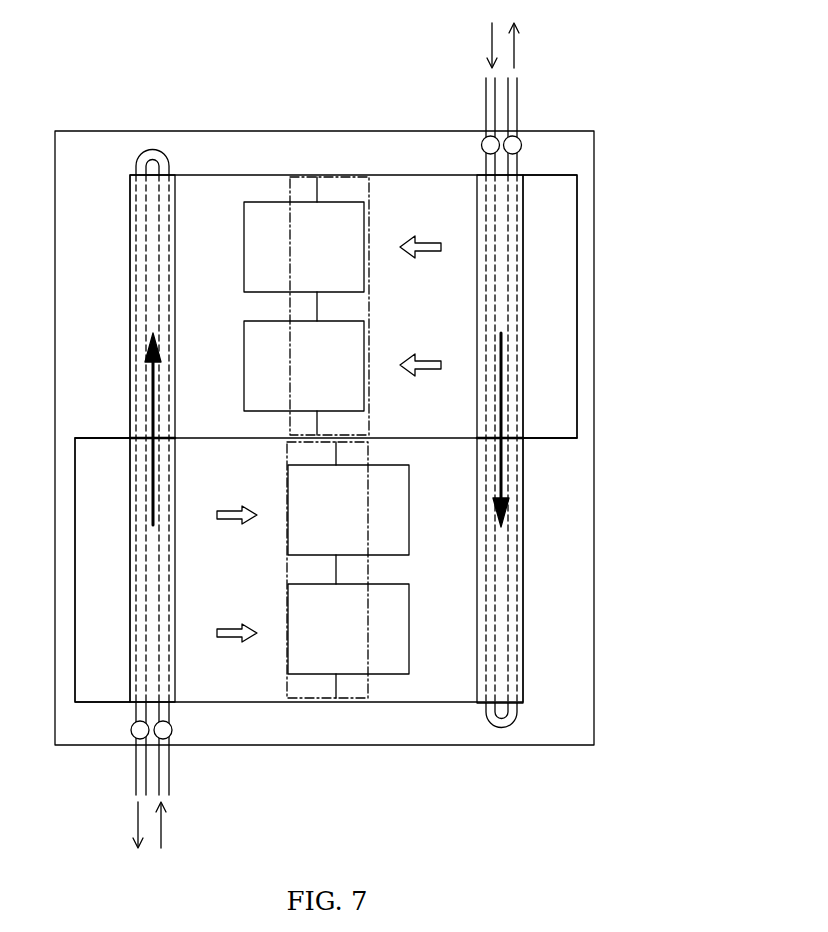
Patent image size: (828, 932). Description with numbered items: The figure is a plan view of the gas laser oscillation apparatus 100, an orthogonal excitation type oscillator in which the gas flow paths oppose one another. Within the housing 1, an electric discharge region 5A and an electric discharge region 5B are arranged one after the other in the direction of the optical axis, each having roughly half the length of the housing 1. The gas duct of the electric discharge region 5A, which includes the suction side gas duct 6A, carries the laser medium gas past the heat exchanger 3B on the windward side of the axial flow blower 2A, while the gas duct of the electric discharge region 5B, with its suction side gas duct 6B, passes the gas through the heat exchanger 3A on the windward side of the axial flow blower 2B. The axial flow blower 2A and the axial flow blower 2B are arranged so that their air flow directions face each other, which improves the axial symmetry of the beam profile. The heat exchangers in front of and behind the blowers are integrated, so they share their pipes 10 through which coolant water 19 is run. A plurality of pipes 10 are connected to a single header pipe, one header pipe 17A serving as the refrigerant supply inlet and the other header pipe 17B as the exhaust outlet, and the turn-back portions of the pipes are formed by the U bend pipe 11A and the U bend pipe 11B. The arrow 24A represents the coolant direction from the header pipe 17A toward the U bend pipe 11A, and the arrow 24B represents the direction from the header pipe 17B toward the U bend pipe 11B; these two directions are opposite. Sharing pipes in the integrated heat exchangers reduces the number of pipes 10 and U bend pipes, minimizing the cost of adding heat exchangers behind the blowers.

The gas laser oscillation apparatus 100 is at (622, 46).
The housing 1 is at (258, 131).
The axial flow blower 2A is at (409, 505).
The axial flow blower 2B is at (244, 242).
The heat exchanger 3A is at (523, 540).
The heat exchanger 3B is at (130, 303).
The electric discharge region 5A is at (287, 570).
The electric discharge region 5B is at (370, 303).
The suction side gas duct 6A is at (88, 438).
The suction side gas duct 6B is at (547, 440).
The pipe 10 is at (519, 152).
The U bend pipe 11A is at (483, 727).
The U bend pipe 11B is at (173, 149).
The header pipe 17A is at (482, 145).
The header pipe 17B is at (168, 734).
The coolant water 19 is at (491, 44).
The arrow 24A is at (495, 468).
The arrow 24B is at (153, 468).